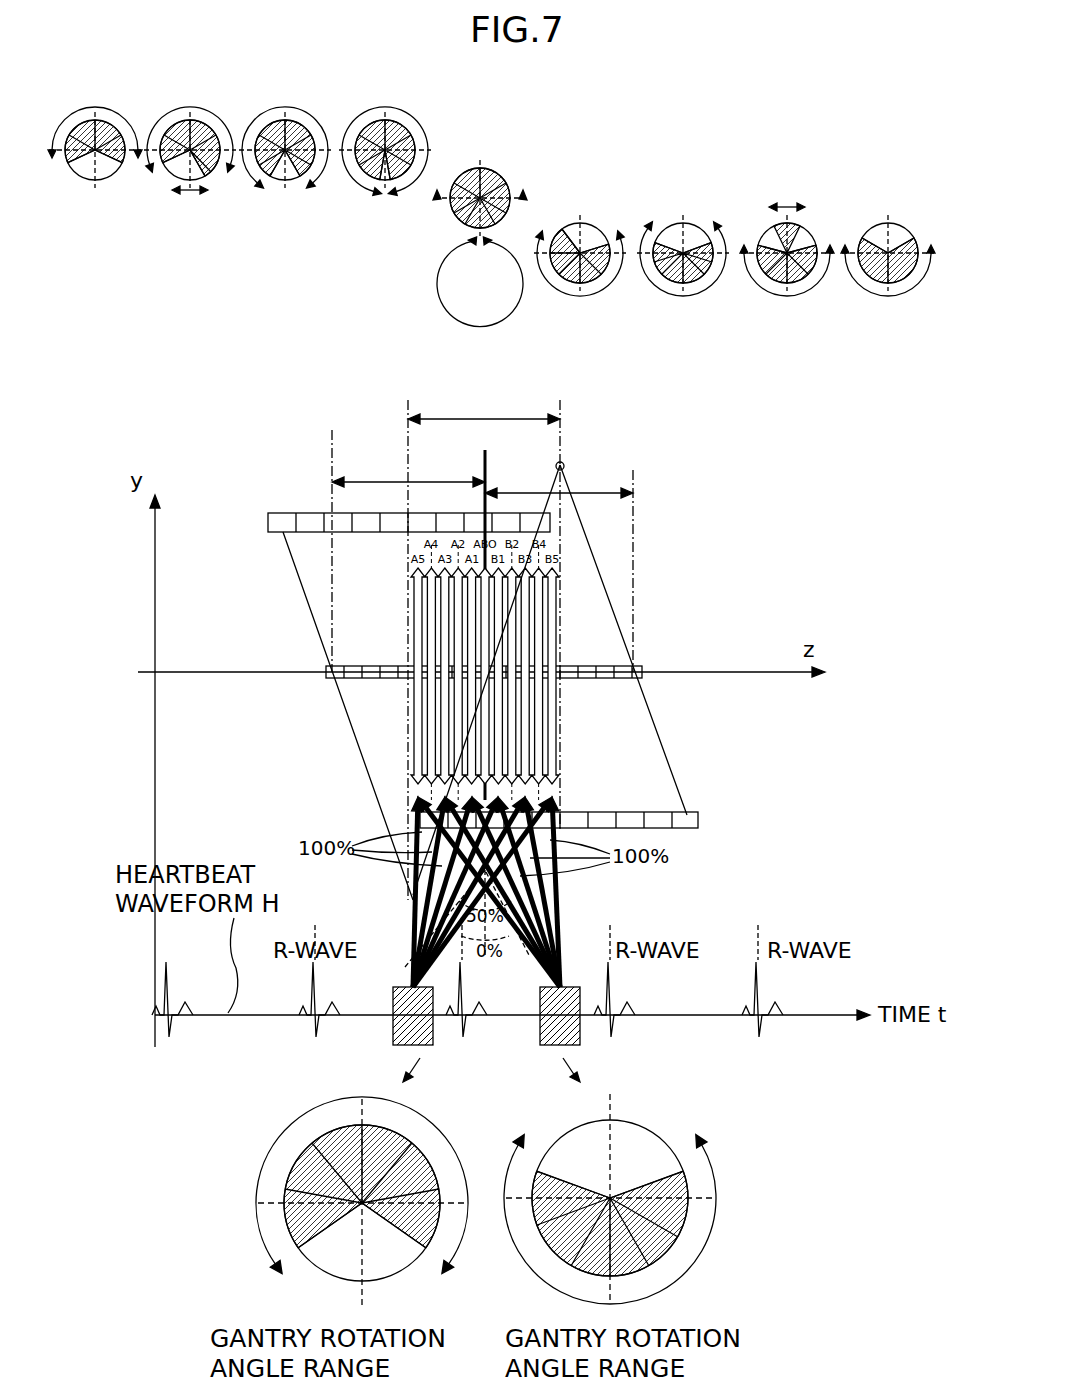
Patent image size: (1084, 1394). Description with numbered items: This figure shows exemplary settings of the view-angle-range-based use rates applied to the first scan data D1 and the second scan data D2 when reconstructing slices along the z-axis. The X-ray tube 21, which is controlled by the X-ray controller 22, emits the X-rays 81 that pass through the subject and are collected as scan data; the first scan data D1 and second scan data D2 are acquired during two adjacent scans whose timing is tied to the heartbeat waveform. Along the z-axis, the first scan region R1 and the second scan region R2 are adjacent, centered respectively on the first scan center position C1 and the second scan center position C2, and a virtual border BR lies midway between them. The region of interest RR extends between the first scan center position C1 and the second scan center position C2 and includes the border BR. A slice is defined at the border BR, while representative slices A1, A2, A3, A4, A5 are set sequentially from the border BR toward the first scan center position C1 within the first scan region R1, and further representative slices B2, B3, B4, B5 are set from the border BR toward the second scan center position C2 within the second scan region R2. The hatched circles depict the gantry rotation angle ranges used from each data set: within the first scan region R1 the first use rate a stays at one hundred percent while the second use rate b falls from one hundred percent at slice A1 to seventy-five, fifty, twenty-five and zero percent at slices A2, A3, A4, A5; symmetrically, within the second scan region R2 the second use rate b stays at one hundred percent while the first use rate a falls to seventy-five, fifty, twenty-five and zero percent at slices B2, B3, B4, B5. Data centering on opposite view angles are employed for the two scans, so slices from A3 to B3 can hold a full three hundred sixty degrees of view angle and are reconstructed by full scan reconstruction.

The X-ray tube 21 is at (564, 466).
The X-ray controller 22 is at (268, 522).
The X-rays 81 is at (348, 722).
The first scan data D1 is at (393, 1041).
The second scan data D2 is at (581, 1041).
The first scan center position C1 is at (407, 646).
The second scan center position C2 is at (559, 611).
The first scan region R1 is at (374, 481).
The second scan region R2 is at (518, 492).
The region of interest RR is at (450, 418).
The virtual border BR is at (485, 613).
The representative slice A1 is at (480, 213).
The representative slice A2 is at (385, 166).
The representative slice A3 is at (285, 166).
The representative slice A4 is at (190, 166).
The representative slice A5 is at (95, 166).
The representative slice B2 is at (580, 270).
The representative slice B3 is at (683, 270).
The representative slice B4 is at (787, 270).
The representative slice B5 is at (888, 270).